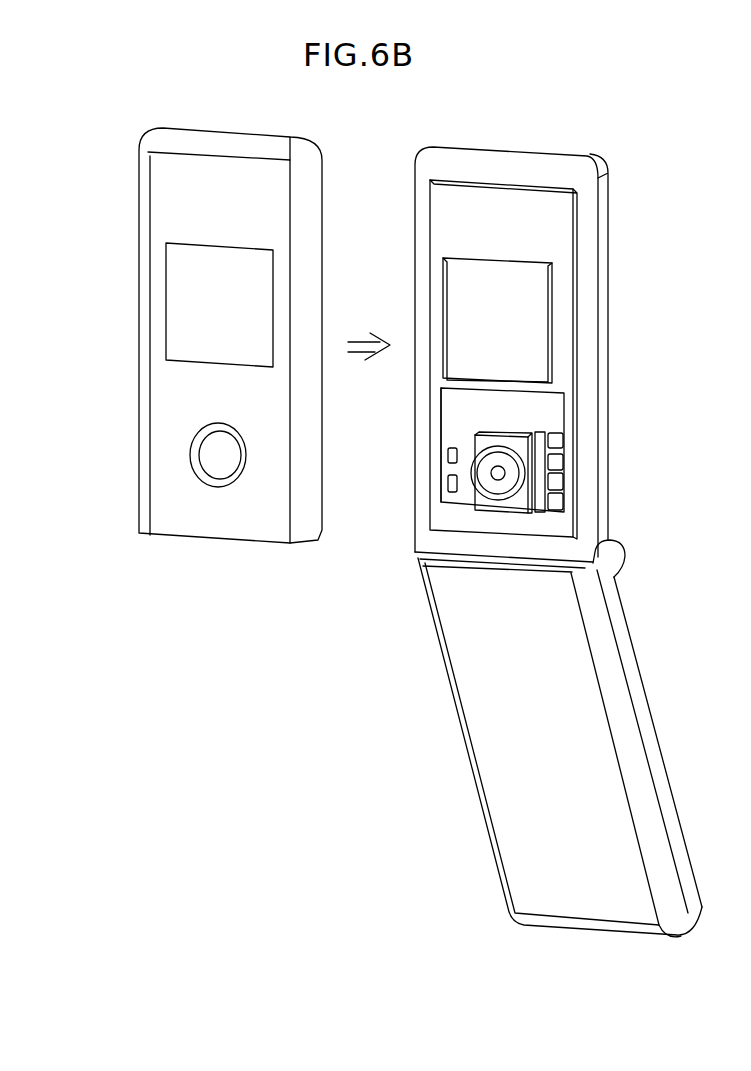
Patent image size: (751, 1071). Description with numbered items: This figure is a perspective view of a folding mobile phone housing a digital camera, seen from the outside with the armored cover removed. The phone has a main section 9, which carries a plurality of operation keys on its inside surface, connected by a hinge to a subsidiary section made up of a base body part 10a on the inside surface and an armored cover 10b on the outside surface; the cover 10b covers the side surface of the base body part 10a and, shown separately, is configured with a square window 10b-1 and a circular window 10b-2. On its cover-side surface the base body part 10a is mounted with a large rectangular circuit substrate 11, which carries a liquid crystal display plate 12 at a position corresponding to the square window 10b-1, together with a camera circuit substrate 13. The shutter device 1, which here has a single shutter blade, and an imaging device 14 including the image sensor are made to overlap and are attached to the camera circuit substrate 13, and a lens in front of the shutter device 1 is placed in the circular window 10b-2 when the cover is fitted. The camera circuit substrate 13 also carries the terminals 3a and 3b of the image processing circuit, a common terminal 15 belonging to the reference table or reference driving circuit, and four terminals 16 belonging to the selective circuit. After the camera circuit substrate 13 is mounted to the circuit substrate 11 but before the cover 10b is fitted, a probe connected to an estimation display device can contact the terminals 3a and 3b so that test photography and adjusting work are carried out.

The shutter device 1 is at (510, 450).
The terminal of the image processing circuit 3a is at (448, 453).
The terminal of the image processing circuit 3b is at (448, 483).
The main section 9 is at (426, 735).
The base body part 10a is at (567, 160).
The armored cover 10b is at (220, 163).
The square window 10b-1 is at (175, 318).
The circular window 10b-2 is at (212, 458).
The circuit substrate 11 is at (570, 208).
The liquid crystal display plate 12 is at (541, 285).
The camera circuit substrate 13 is at (458, 505).
The imaging device 14 is at (520, 515).
The common terminal 15 is at (537, 440).
The four terminals 16 is at (556, 440).